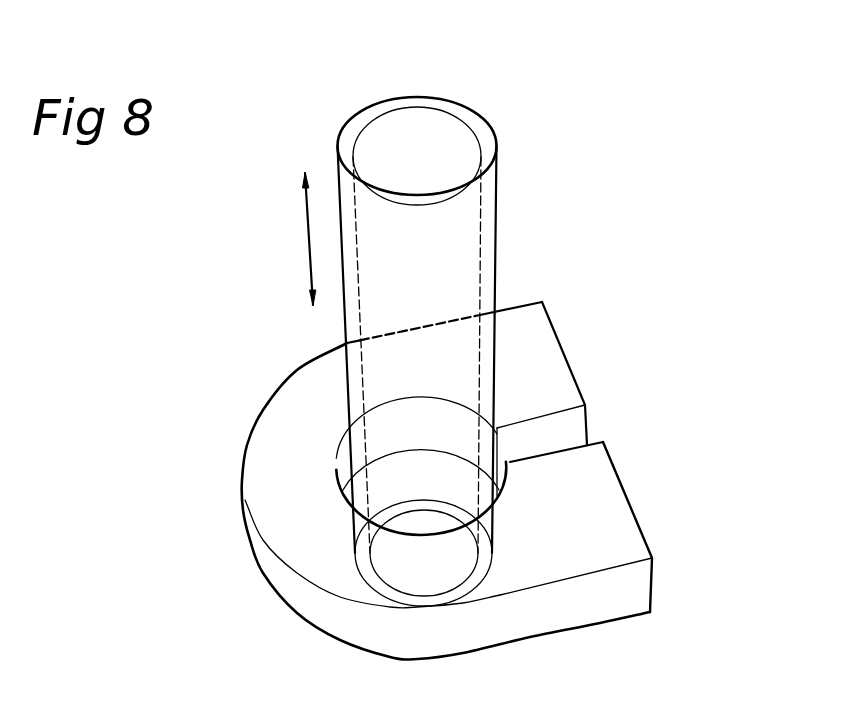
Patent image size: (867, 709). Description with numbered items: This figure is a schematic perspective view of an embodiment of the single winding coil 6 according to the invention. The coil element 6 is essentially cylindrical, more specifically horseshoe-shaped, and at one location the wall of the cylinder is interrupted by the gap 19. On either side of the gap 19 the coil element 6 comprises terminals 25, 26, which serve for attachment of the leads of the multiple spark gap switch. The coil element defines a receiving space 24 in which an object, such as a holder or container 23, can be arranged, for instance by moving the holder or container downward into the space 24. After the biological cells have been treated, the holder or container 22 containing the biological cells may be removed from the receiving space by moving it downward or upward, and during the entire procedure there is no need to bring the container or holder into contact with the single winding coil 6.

The single winding coil 6 is at (282, 480).
The gap 19 is at (565, 437).
The holder or container 22 is at (475, 222).
The holder or container 23 is at (423, 157).
The receiving space 24 is at (345, 460).
The terminal 25 is at (603, 517).
The terminal 26 is at (542, 357).